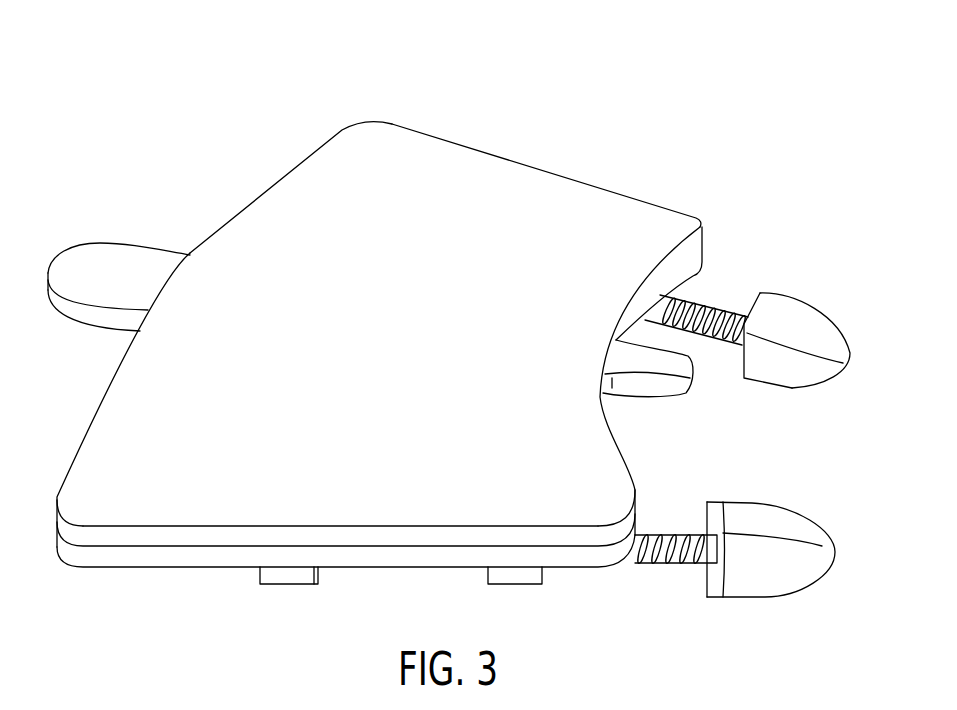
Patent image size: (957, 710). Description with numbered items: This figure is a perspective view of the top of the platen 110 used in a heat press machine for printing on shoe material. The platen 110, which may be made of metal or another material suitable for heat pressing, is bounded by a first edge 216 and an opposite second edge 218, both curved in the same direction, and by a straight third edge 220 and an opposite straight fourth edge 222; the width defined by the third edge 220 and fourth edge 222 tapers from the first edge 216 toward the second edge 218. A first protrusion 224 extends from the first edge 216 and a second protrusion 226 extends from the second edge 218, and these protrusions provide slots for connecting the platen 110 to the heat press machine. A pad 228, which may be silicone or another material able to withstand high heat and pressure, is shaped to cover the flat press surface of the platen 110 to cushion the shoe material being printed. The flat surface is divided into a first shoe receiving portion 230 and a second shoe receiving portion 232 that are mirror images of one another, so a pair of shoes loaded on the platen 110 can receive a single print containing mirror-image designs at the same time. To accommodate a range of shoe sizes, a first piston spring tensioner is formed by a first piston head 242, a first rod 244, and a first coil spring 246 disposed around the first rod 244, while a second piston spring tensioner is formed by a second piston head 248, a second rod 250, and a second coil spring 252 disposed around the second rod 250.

The platen 110 is at (335, 82).
The first edge 216 is at (277, 180).
The second edge 218 is at (613, 445).
The third edge 220 is at (234, 527).
The fourth edge 222 is at (481, 147).
The first protrusion 224 is at (70, 263).
The second protrusion 226 is at (681, 389).
The pad 228 is at (95, 483).
The first shoe receiving portion 230 is at (380, 497).
The second shoe receiving portion 232 is at (393, 160).
The first piston head 242 is at (790, 573).
The first rod 244 is at (649, 553).
The first coil spring 246 is at (691, 557).
The second piston head 248 is at (807, 320).
The second rod 250 is at (733, 313).
The second coil spring 252 is at (718, 314).